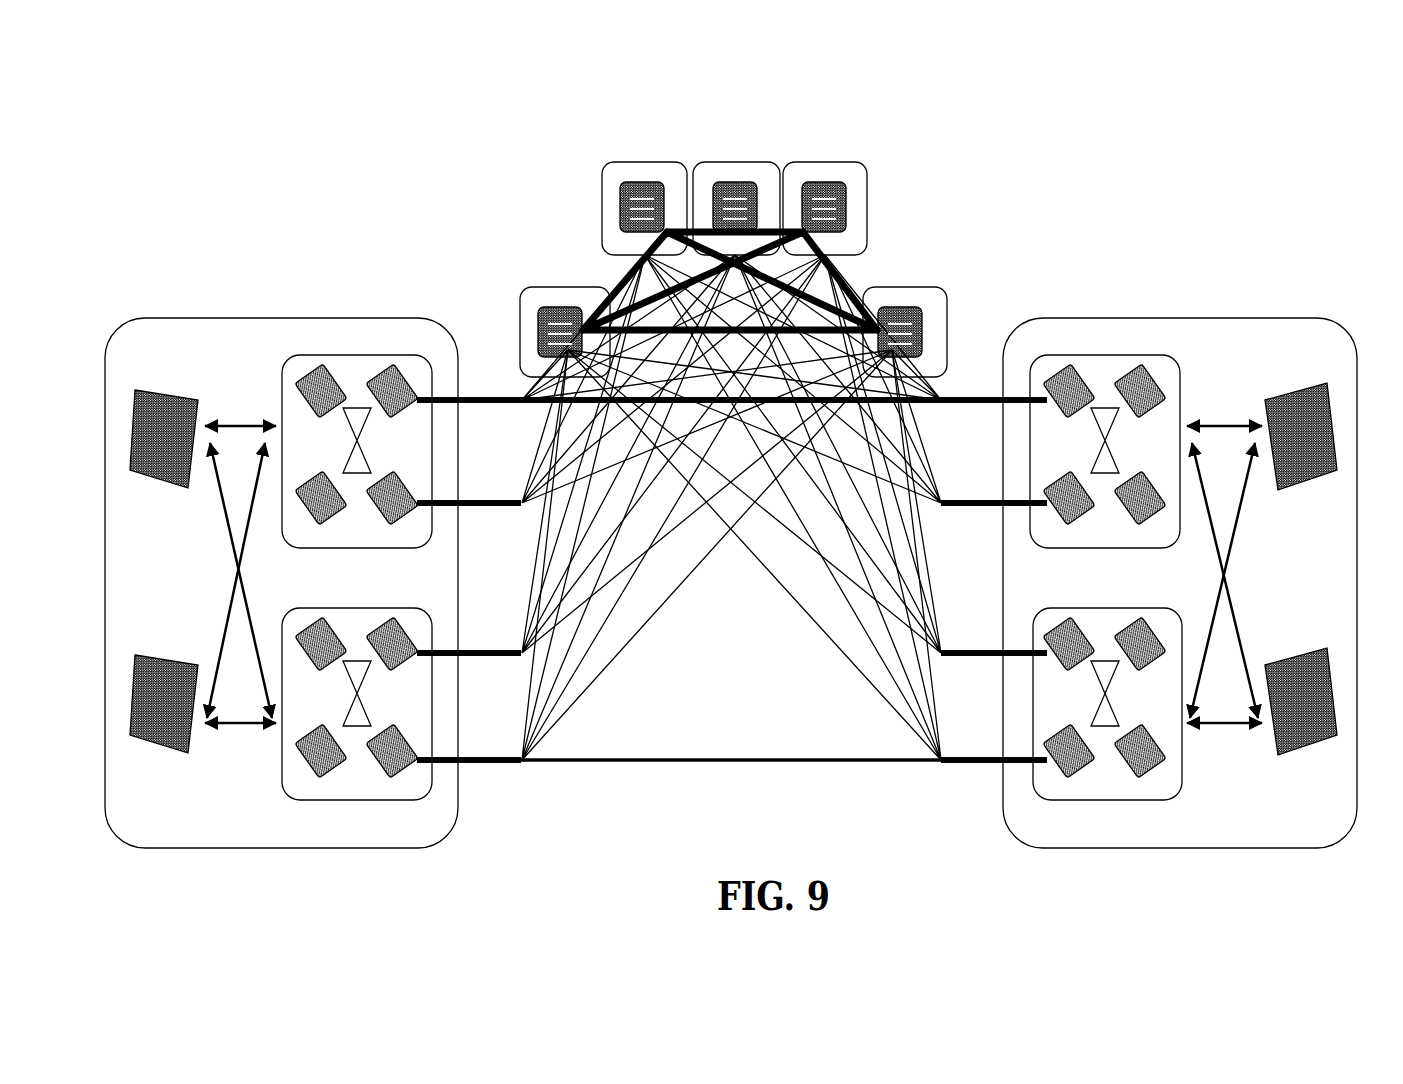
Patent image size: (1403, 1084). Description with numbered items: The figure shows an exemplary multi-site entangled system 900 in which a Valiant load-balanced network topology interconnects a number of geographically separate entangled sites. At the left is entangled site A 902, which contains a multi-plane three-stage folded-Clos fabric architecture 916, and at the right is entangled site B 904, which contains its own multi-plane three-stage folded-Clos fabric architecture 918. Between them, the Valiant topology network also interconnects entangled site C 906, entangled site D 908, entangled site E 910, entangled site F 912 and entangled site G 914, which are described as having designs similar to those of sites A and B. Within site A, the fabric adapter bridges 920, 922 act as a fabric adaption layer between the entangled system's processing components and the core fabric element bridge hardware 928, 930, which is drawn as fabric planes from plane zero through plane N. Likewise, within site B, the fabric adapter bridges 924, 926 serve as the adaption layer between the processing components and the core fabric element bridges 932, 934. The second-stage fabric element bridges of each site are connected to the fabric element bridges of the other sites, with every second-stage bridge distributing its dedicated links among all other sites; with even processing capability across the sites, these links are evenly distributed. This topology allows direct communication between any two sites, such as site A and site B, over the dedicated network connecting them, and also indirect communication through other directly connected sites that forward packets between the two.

The multi-site entangled system 900 is at (1307, 140).
The entangled site A 902 is at (333, 284).
The entangled site B 904 is at (1232, 280).
The entangled site C 906 is at (518, 245).
The entangled site D 908 is at (600, 131).
The entangled site E 910 is at (748, 142).
The entangled site F 912 is at (863, 128).
The entangled site G 914 is at (948, 240).
The multi-plane three-stage folded-Clos fabric architecture 916 is at (440, 838).
The multi-plane three-stage folded-Clos fabric architecture 918 is at (1013, 838).
The fabric adapter bridge 920 is at (150, 395).
The fabric adapter bridge 922 is at (148, 660).
The fabric adapter bridge 924 is at (1292, 395).
The fabric adapter bridge 926 is at (1283, 660).
The fabric element bridge 928 is at (425, 540).
The fabric element bridge 930 is at (425, 612).
The fabric element bridge 932 is at (1035, 540).
The fabric element bridge 934 is at (1035, 612).